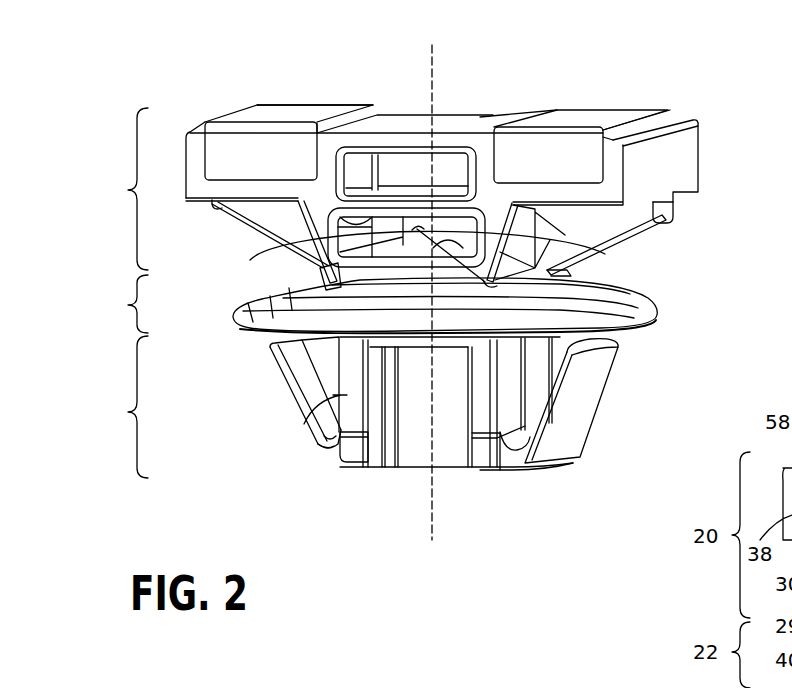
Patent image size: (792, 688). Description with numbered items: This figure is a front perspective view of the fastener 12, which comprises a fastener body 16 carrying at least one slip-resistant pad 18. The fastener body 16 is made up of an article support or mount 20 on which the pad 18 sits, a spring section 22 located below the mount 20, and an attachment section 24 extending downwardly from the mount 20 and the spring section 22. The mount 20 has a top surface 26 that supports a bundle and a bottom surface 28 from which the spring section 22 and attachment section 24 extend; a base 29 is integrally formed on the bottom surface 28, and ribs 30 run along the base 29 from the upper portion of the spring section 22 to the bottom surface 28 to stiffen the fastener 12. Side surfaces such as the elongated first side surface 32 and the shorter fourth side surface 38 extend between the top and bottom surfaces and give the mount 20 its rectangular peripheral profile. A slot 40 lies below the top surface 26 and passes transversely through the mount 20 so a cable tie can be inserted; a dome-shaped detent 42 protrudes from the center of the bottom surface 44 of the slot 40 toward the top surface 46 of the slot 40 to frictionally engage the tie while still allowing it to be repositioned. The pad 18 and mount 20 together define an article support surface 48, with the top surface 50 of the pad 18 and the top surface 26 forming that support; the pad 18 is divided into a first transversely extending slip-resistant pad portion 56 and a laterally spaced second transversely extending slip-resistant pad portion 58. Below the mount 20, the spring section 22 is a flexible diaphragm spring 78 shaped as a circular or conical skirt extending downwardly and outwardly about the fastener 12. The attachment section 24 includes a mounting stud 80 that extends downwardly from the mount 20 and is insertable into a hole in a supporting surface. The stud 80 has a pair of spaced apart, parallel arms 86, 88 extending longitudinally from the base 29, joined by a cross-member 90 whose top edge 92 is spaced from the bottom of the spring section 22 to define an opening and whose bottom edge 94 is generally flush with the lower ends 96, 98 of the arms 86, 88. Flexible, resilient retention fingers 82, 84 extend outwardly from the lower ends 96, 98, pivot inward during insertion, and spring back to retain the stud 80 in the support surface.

The fastener 12 is at (204, 52).
The fastener body 16 is at (710, 140).
The slip-resistant pad 18 is at (296, 100).
The article support or mount 20 is at (121, 189).
The spring section 22 is at (121, 304).
The attachment section 24 is at (121, 407).
The top surface 26 is at (670, 117).
The bottom surface 28 is at (683, 200).
The base 29 is at (300, 240).
The ribs 30 is at (283, 226).
The first side surface 32 is at (230, 214).
The fourth side surface 38 is at (660, 170).
The slot 40 is at (583, 300).
The detent 42 is at (585, 235).
The bottom surface of the slot 44 is at (330, 280).
The top surface of the slot 46 is at (328, 224).
The article support surface 48 is at (593, 95).
The top surface of the slip-resistant pad 50 is at (312, 112).
The first transversely extending slip-resistant pad portion 56 is at (245, 143).
The second transversely extending slip-resistant pad portion 58 is at (588, 150).
The diaphragm spring 78 is at (643, 298).
The mounting stud 80 is at (262, 389).
The retention finger 82 is at (286, 392).
The retention finger 84 is at (573, 393).
The arm 86 is at (308, 447).
The arm 88 is at (530, 345).
The cross-member 90 is at (442, 432).
The top edge 92 is at (330, 334).
The bottom edge 94 is at (413, 472).
The lower end 96 is at (333, 472).
The lower end 98 is at (510, 475).